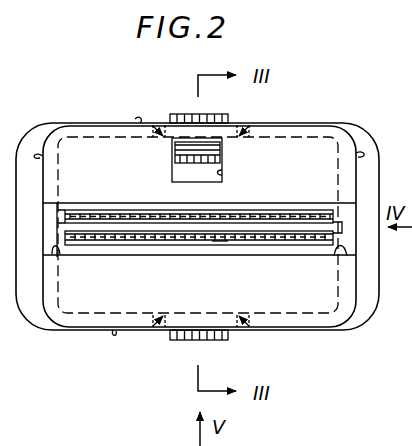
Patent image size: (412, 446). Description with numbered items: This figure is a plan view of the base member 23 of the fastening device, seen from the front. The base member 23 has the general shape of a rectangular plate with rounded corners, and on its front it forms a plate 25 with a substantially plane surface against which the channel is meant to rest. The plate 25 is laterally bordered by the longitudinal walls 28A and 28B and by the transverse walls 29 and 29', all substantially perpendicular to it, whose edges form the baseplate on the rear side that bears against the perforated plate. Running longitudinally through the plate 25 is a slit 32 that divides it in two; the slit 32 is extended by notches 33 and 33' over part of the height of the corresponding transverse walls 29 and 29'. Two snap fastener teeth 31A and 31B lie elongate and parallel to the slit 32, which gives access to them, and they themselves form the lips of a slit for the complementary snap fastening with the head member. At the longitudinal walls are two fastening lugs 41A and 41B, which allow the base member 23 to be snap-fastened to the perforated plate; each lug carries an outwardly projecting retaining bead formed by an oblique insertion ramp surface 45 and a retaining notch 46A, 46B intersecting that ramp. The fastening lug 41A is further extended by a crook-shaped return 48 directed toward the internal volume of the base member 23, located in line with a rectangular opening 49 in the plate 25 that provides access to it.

The base member 23 is at (55, 116).
The plate 25 is at (265, 294).
The longitudinal wall 28A is at (137, 121).
The longitudinal wall 28B is at (113, 331).
The transverse wall 29 is at (60, 158).
The transverse wall 29' is at (332, 155).
The snap fastener tooth 31A is at (128, 211).
The snap fastener tooth 31B is at (156, 245).
The slit 32 is at (226, 248).
The notch 33 is at (68, 268).
The notch 33' is at (326, 268).
The fastening lug 41A is at (182, 111).
The fastening lug 41B is at (172, 342).
The insertion ramp surface 45 is at (405, 237).
The retaining notch 46A is at (228, 118).
The retaining notch 46B is at (228, 340).
The crook-shaped return 48 is at (218, 160).
The rectangular opening 49 is at (222, 175).